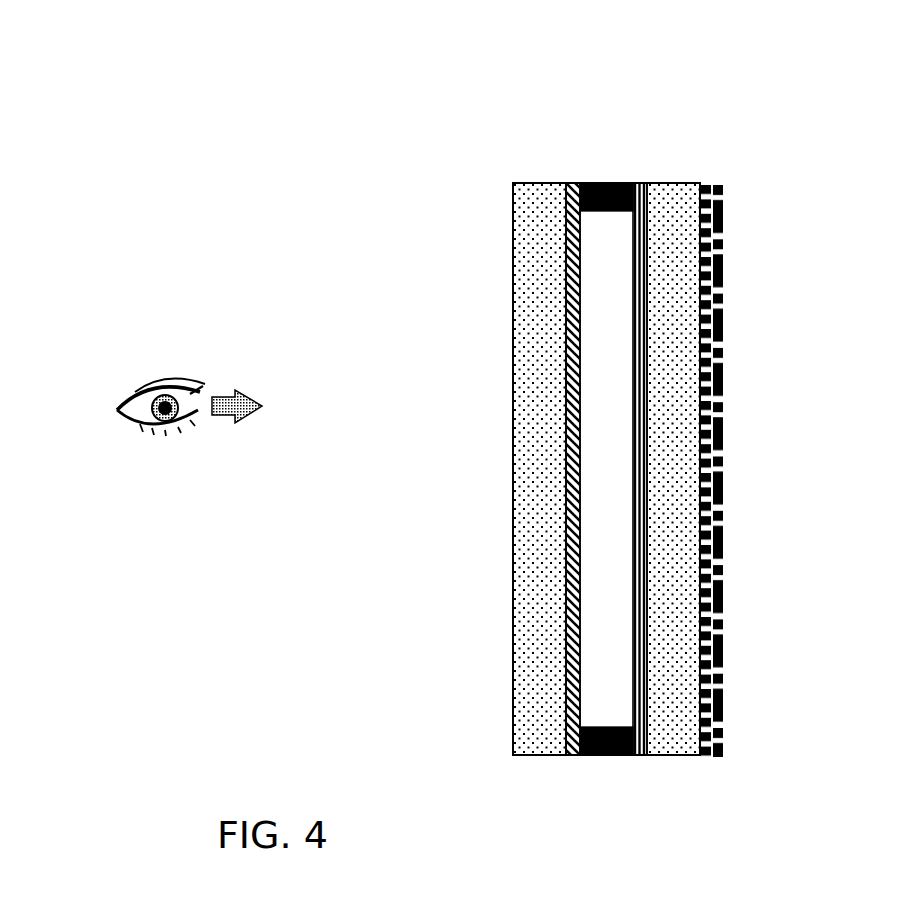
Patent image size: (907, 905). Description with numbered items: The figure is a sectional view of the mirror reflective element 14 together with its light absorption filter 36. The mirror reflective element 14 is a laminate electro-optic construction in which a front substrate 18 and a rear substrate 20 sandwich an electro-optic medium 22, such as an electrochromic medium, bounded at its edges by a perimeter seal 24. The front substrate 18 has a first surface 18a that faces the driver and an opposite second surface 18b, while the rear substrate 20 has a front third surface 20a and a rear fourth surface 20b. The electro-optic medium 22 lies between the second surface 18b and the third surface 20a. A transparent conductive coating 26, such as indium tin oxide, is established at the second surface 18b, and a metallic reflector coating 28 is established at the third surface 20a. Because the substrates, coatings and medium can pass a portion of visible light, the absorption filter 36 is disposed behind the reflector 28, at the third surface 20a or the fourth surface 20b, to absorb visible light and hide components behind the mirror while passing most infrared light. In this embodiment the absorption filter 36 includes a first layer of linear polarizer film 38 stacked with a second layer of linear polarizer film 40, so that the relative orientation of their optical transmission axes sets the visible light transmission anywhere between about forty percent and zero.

The mirror reflective element 14 is at (398, 123).
The front substrate 18 is at (538, 499).
The first surface 18a is at (514, 371).
The second surface 18b is at (565, 628).
The rear substrate 20 is at (713, 433).
The third surface 20a is at (647, 361).
The fourth surface 20b is at (713, 258).
The electro-optic medium 22 is at (607, 320).
The perimeter seal 24 is at (612, 183).
The transparent conductive coating 26 is at (570, 550).
The metallic reflector coating 28 is at (640, 509).
The light absorption filter 36 is at (735, 738).
The first layer of linear polarizer film 38 is at (702, 183).
The second layer of linear polarizer film 40 is at (717, 678).